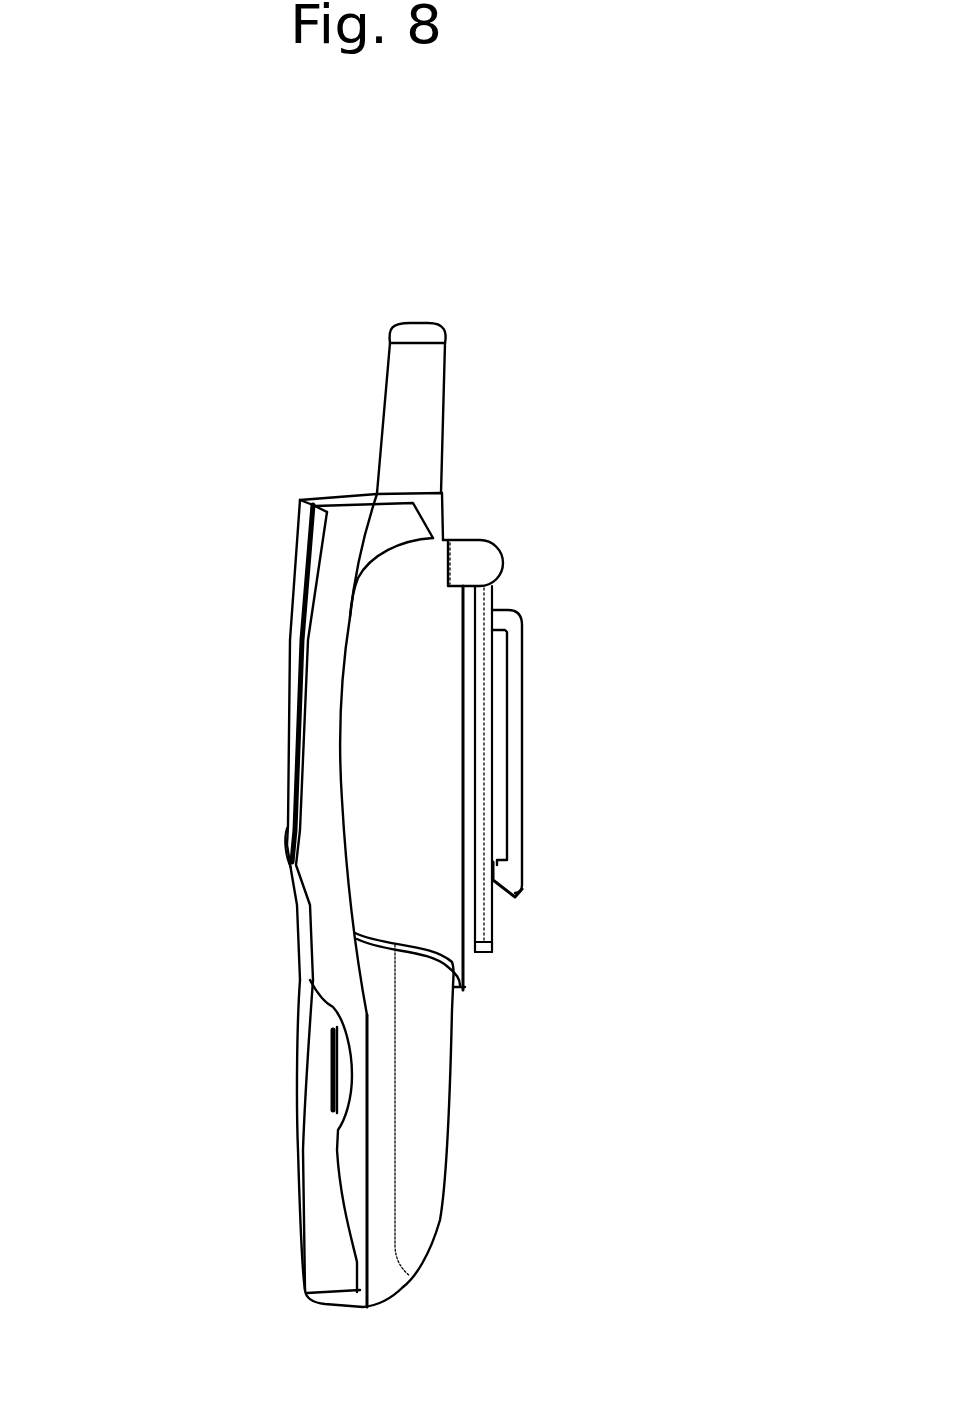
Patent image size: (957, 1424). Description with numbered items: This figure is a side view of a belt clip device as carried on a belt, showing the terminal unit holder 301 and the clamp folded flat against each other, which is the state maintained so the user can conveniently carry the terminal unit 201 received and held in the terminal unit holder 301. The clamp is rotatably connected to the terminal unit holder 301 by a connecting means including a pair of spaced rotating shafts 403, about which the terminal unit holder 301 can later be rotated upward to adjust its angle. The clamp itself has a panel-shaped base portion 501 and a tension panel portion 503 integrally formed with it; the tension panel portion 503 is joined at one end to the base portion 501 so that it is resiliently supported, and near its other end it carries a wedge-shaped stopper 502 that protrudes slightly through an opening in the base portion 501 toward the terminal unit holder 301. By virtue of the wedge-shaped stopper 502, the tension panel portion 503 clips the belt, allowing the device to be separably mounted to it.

The terminal unit 201 is at (333, 978).
The terminal unit holder 301 is at (358, 680).
The rotating shaft 403 is at (482, 555).
The base portion 501 is at (487, 953).
The wedge-shaped stopper 502 is at (500, 880).
The tension panel portion 503 is at (518, 725).